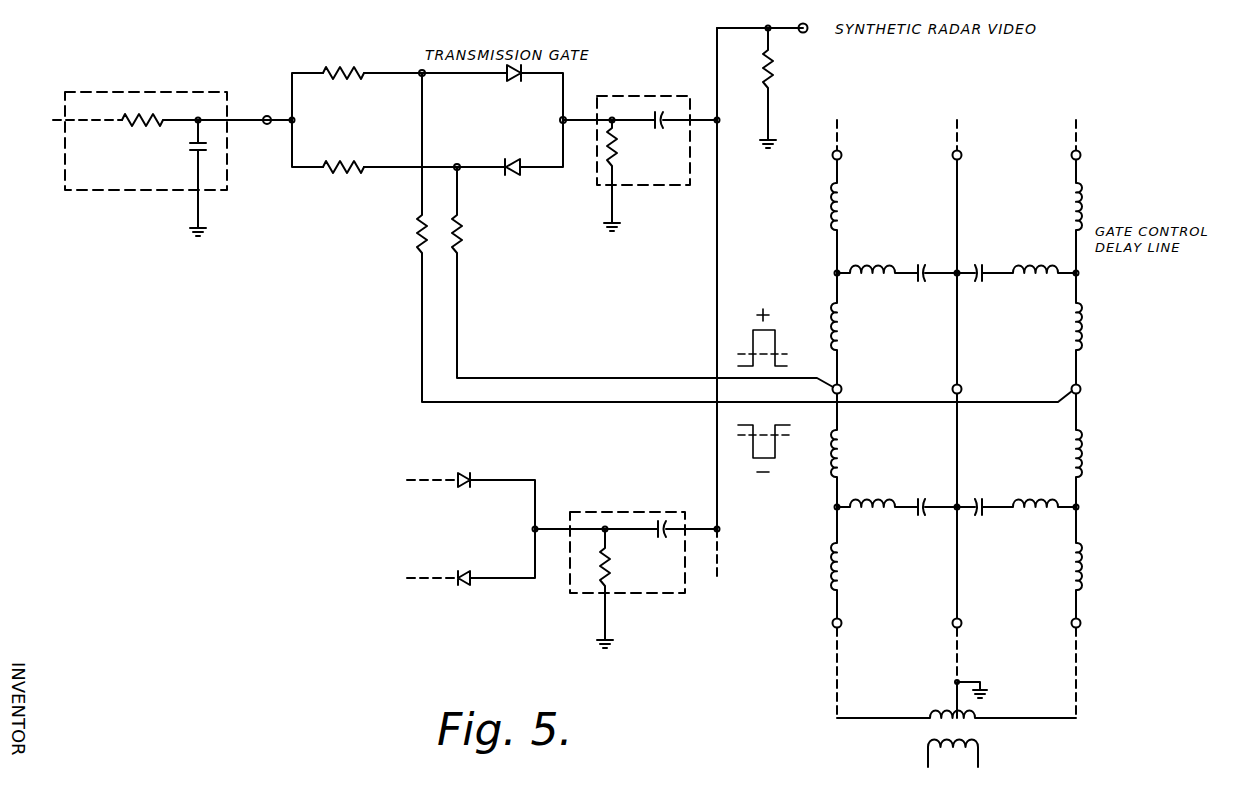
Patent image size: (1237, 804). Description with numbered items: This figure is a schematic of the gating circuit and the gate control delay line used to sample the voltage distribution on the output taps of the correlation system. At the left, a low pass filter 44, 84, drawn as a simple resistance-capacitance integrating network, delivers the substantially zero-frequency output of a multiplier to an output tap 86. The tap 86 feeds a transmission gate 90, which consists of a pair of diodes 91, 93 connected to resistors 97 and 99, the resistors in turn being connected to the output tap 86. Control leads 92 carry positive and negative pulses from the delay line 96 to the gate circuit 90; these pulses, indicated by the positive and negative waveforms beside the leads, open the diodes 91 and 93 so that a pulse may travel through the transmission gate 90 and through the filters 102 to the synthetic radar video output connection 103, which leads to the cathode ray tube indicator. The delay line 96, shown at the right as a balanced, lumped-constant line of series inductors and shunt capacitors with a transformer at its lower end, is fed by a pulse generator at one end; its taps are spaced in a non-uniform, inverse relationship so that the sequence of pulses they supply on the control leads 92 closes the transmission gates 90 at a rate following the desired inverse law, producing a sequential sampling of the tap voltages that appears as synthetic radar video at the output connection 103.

The low pass filter 44 is at (172, 135).
The low pass filter 84 is at (172, 164).
The output tap 86 is at (267, 124).
The transmission gate 90 is at (388, 168).
The diode 91 is at (516, 85).
The control lead 92 is at (592, 358).
The diode 93 is at (514, 157).
The delay line 96 is at (1086, 563).
The resistor 97 is at (343, 81).
The resistor 99 is at (350, 157).
The filter 102 is at (685, 74).
The synthetic radar video output connection 103 is at (802, 35).